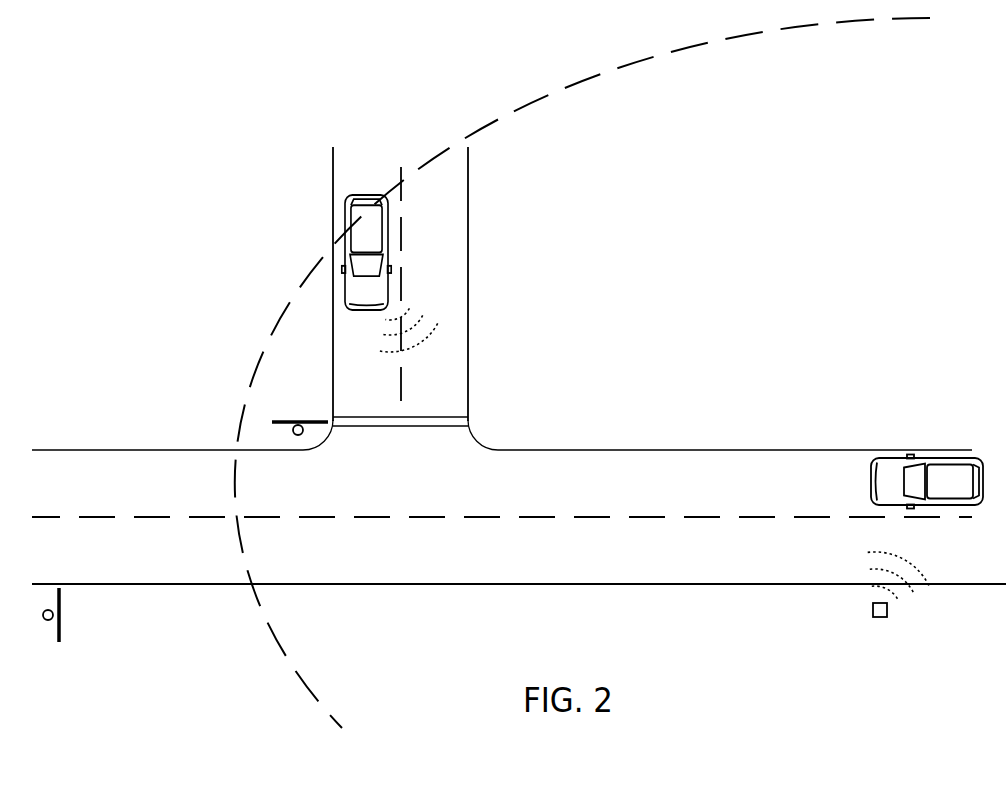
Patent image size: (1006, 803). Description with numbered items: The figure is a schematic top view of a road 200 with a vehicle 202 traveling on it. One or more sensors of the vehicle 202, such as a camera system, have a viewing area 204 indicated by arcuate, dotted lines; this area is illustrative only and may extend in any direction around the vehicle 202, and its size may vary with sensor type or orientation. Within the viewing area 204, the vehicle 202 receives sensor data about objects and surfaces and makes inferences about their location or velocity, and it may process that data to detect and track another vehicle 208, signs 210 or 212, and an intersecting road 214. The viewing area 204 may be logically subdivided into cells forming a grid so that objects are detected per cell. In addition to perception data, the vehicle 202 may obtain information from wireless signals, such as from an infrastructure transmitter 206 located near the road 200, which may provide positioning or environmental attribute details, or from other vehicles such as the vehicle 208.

The road 200 is at (160, 113).
The vehicle 202 is at (882, 468).
The viewing area 204 is at (552, 97).
The infrastructure transmitter 206 is at (881, 618).
The another vehicle 208 is at (348, 233).
The sign 210 is at (278, 422).
The sign 212 is at (59, 640).
The intersecting road 214 is at (450, 387).